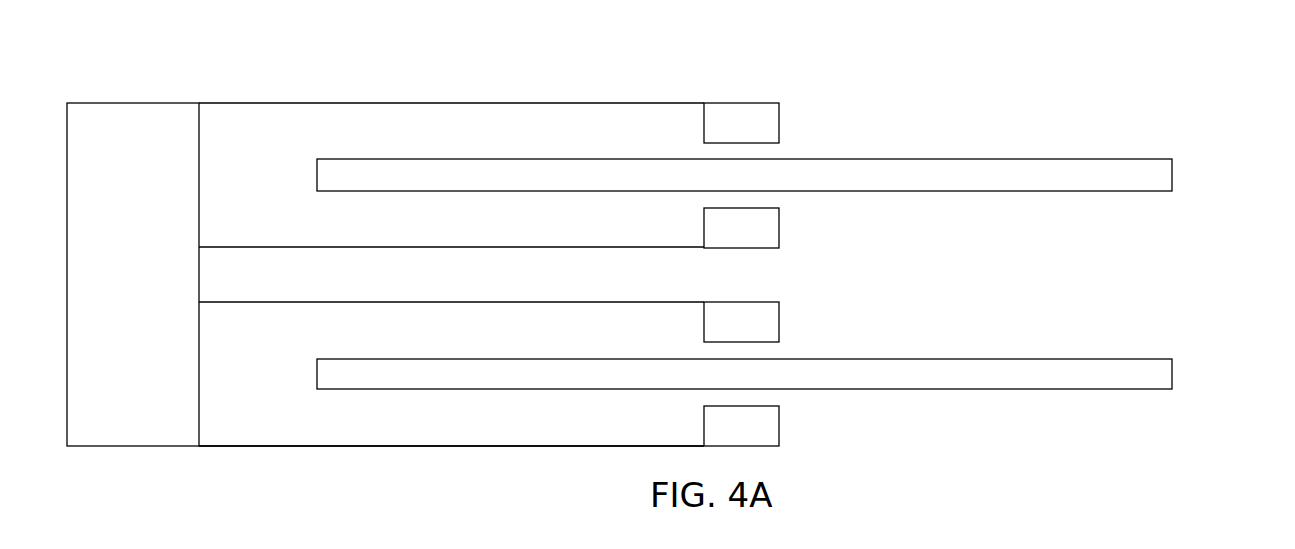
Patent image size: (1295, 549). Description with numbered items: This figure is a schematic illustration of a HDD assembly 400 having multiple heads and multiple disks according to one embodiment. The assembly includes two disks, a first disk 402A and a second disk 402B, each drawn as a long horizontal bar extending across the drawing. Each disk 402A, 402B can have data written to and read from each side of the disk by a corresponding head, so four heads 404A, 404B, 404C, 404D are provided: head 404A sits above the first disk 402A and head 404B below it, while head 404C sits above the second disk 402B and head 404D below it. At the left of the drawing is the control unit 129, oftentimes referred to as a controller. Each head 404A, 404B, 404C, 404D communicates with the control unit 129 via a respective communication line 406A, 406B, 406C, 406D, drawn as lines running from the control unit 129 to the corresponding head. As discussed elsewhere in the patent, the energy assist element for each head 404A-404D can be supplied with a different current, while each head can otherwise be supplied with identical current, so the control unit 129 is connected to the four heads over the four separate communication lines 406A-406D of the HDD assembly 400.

The control unit 129 is at (152, 273).
The HDD assembly 400 is at (1178, 88).
The disk 402A is at (1058, 178).
The disk 402B is at (1058, 376).
The head 404A is at (770, 133).
The head 404B is at (770, 236).
The head 404C is at (770, 331).
The head 404D is at (770, 436).
The communication line 406A is at (583, 101).
The communication line 406B is at (583, 246).
The communication line 406C is at (583, 301).
The communication line 406D is at (583, 445).